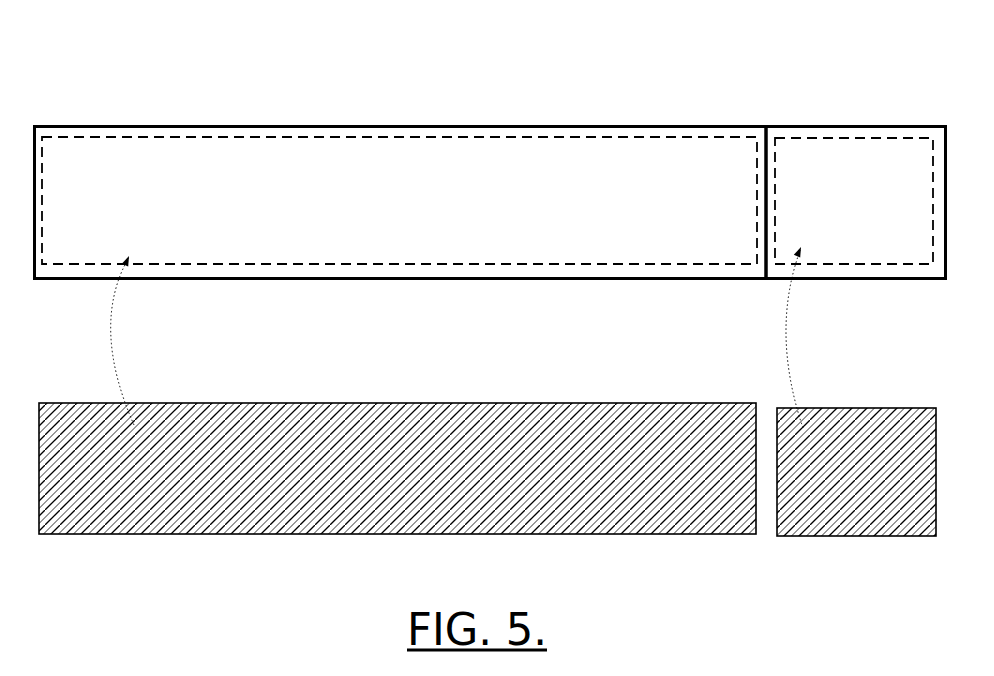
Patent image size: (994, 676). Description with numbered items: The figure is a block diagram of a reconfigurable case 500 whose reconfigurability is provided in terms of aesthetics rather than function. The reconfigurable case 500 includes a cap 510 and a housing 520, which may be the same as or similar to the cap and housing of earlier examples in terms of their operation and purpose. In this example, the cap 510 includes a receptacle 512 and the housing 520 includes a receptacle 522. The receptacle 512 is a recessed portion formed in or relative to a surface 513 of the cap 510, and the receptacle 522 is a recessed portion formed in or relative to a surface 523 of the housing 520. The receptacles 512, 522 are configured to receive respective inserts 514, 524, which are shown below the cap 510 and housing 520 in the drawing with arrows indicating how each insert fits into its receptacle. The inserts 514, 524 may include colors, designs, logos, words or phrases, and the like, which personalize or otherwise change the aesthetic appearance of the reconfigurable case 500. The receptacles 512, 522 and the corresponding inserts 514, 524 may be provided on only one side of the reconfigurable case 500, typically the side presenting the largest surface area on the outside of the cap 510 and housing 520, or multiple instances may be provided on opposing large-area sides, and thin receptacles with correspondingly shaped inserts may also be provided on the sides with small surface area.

The reconfigurable case 500 is at (490, 181).
The cap 510 is at (856, 184).
The receptacle 512 is at (859, 184).
The surface 513 is at (788, 130).
The insert 514 is at (835, 435).
The housing 520 is at (401, 202).
The receptacle 522 is at (399, 164).
The surface 523 is at (182, 132).
The insert 524 is at (285, 428).